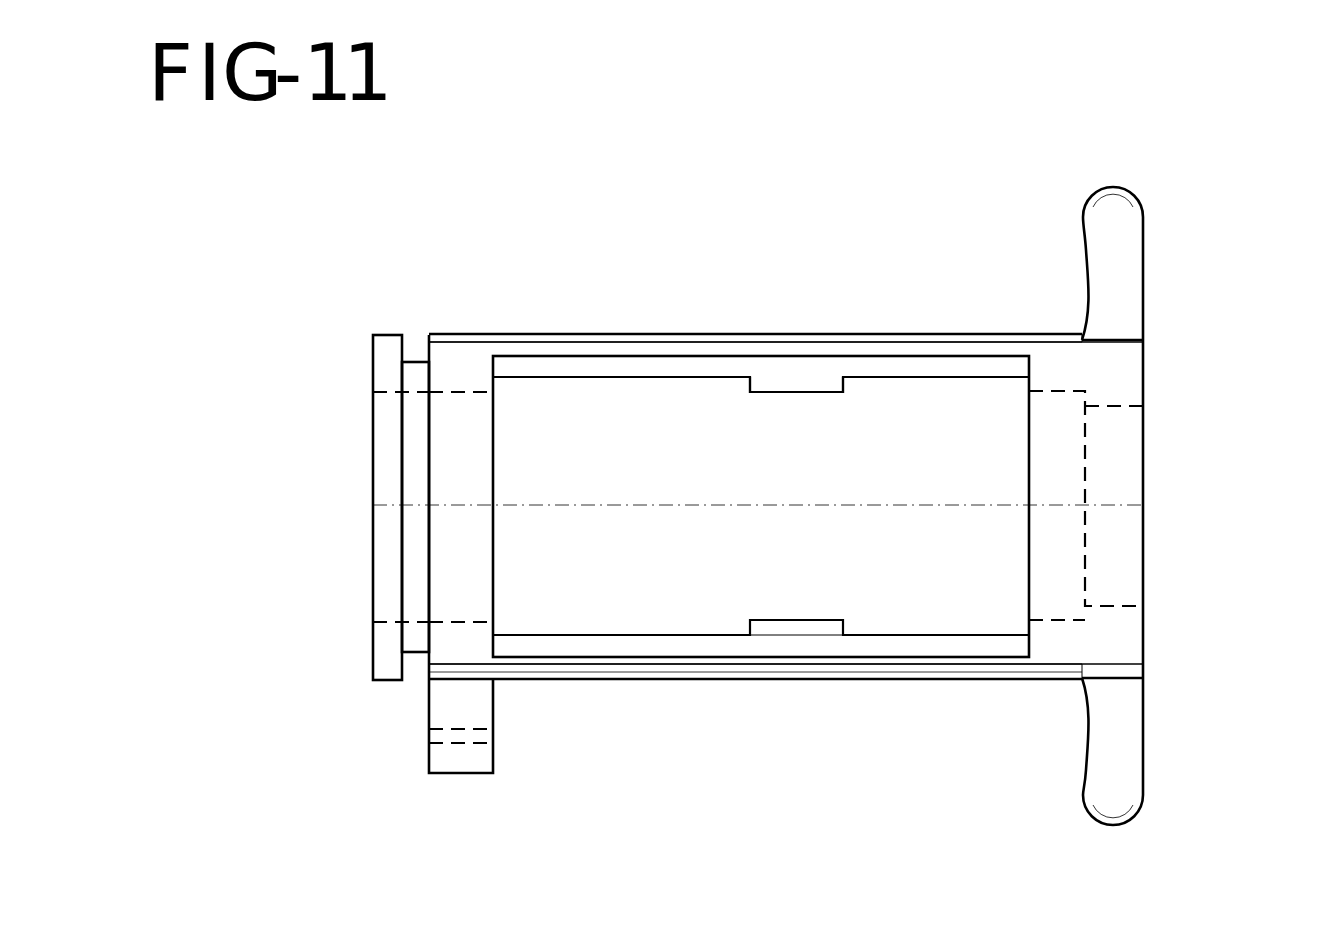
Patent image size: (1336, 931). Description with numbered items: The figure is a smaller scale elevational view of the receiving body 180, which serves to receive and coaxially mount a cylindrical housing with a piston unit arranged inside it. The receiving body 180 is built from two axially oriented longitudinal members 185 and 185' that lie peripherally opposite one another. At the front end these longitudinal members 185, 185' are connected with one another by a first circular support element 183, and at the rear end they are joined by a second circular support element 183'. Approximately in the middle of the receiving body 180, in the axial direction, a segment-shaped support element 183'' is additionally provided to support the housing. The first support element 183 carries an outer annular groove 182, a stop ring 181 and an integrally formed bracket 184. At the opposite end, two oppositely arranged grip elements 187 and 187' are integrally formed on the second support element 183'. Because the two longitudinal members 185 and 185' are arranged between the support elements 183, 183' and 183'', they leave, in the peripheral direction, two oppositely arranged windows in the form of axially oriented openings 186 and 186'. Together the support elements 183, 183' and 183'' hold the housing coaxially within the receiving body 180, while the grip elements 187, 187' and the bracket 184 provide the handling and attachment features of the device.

The receiving body 180 is at (933, 333).
The stop ring 181 is at (373, 442).
The outer annular groove 182 is at (413, 653).
The first circular support element 183 is at (635, 506).
The second circular support element 183' is at (1157, 505).
The segment-shaped support element 183'' is at (796, 296).
The bracket 184 is at (429, 710).
The longitudinal member 185 is at (755, 261).
The longitudinal member 185' is at (755, 754).
The axially oriented opening 186 is at (824, 670).
The axially oriented opening 186' is at (796, 627).
The grip element 187 is at (1198, 263).
The grip element 187' is at (1201, 751).